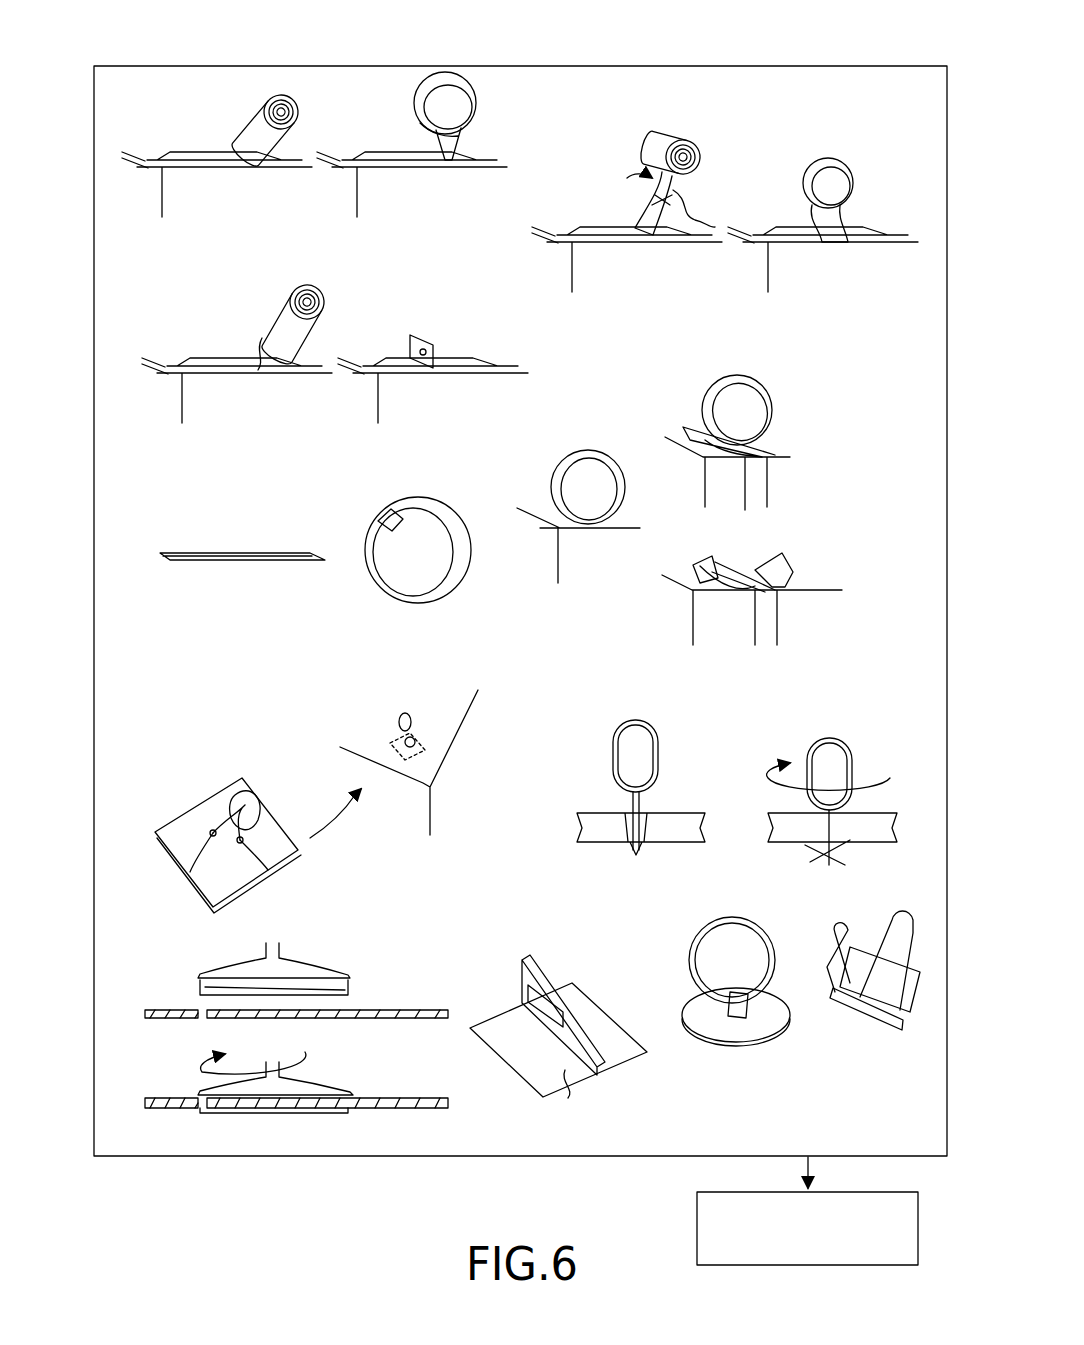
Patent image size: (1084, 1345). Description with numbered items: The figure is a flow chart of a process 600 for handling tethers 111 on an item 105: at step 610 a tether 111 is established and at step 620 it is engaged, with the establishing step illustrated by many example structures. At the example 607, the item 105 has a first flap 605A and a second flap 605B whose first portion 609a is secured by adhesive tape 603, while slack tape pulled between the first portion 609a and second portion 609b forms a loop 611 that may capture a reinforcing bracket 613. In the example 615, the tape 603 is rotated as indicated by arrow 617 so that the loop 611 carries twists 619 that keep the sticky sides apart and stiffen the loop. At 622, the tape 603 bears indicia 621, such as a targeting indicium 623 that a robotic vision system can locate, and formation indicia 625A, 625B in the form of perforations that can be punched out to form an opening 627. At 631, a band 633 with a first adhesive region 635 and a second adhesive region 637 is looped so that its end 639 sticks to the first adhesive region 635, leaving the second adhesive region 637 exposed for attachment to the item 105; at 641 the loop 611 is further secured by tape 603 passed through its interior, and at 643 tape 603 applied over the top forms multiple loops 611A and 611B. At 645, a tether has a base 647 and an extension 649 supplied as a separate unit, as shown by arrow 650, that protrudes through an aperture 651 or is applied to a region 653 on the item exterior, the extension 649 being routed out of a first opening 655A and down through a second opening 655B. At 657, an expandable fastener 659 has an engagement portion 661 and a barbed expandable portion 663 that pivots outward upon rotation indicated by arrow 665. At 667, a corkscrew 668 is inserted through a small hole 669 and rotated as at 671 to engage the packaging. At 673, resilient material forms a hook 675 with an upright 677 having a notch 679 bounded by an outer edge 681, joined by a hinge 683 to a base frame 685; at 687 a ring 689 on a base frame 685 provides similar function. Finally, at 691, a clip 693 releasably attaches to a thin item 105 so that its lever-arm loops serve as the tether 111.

The process 600 is at (752, 61).
The establishing a tether 610 is at (661, 1157).
The engaging a tether 620 is at (697, 1236).
The item 105 is at (153, 148).
The tether 111 is at (484, 121).
The adhesive tape 603 is at (270, 97).
The first flap 605A is at (145, 175).
The second flap 605B is at (157, 178).
The illustrative example 607 is at (121, 155).
The first portion 609a is at (185, 183).
The second portion 609b is at (293, 179).
The loop 611 is at (412, 125).
The first loop 611A is at (710, 558).
The second loop 611B is at (790, 552).
The bracket 613 is at (438, 82).
The twisted tape example 615 is at (520, 240).
The arrow 617 is at (707, 226).
The twist 619 is at (825, 160).
The indicia 621 is at (168, 298).
The indicia example 622 is at (123, 368).
The targeting indicium 623 is at (252, 368).
The first formation indicium 625A is at (270, 345).
The second formation indicium 625B is at (283, 330).
The opening 627 is at (427, 342).
The band example 631 is at (125, 550).
The band 633 is at (205, 562).
The first adhesive region 635 is at (295, 563).
The second adhesive region 637 is at (263, 562).
The end 639 is at (170, 572).
The interior anchoring example 641 is at (828, 425).
The over-top anchoring example 643 is at (855, 590).
The base and extension example 645 is at (122, 865).
The base 647 is at (192, 815).
The extension 649 is at (265, 803).
The arrow 650 is at (394, 784).
The aperture 651 is at (402, 728).
The region 653 is at (410, 768).
The first opening 655A is at (190, 872).
The second opening 655B is at (266, 872).
The expandable fastener example 657 is at (603, 752).
The expandable fastener 659 is at (660, 770).
The engagement portion 661 is at (616, 775).
The expandable portion 663 is at (628, 842).
The arrow 665 is at (880, 768).
The corkscrew example 667 is at (123, 1050).
The corkscrew 668 is at (352, 990).
The small hole 669 is at (198, 1020).
The rotation arrow 671 is at (335, 1072).
The hook example 673 is at (614, 982).
The hook 675 is at (511, 957).
The upright 677 is at (612, 1057).
The notch 679 is at (537, 998).
The outer edge 681 is at (527, 996).
The hinge 683 is at (575, 1074).
The base frame 685 is at (525, 1050).
The ring example 687 is at (770, 928).
The ring 689 is at (697, 932).
The clip example 691 is at (918, 953).
The clip 693 is at (912, 1005).